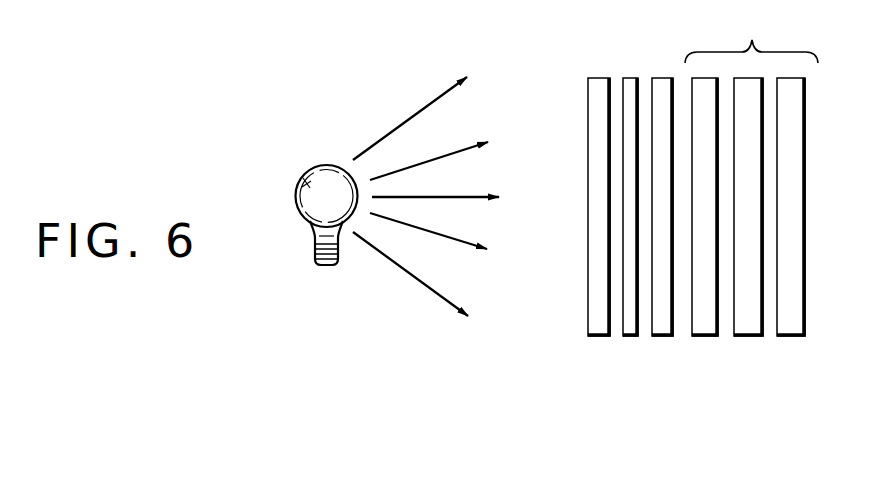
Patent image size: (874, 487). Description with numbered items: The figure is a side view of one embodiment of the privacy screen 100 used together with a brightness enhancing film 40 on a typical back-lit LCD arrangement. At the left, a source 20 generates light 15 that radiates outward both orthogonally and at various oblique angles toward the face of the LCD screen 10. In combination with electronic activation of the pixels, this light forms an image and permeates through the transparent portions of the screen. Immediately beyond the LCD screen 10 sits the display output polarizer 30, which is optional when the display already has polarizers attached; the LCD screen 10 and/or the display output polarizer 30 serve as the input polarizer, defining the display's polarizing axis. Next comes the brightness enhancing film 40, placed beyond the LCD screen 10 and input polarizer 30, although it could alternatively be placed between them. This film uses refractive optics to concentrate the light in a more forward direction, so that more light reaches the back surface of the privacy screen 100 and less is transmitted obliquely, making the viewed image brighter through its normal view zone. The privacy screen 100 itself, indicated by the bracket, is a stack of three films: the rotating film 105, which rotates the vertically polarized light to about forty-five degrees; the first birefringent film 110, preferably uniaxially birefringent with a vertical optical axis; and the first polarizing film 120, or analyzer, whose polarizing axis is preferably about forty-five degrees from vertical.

The LCD screen 10 is at (598, 337).
The light 15 is at (435, 102).
The source 20 is at (310, 188).
The display output polarizer 30 is at (630, 337).
The brightness enhancing film 40 is at (662, 337).
The privacy screen 100 is at (751, 213).
The rotating film 105 is at (705, 337).
The first birefringent film 110 is at (748, 337).
The first polarizing film 120 is at (790, 337).